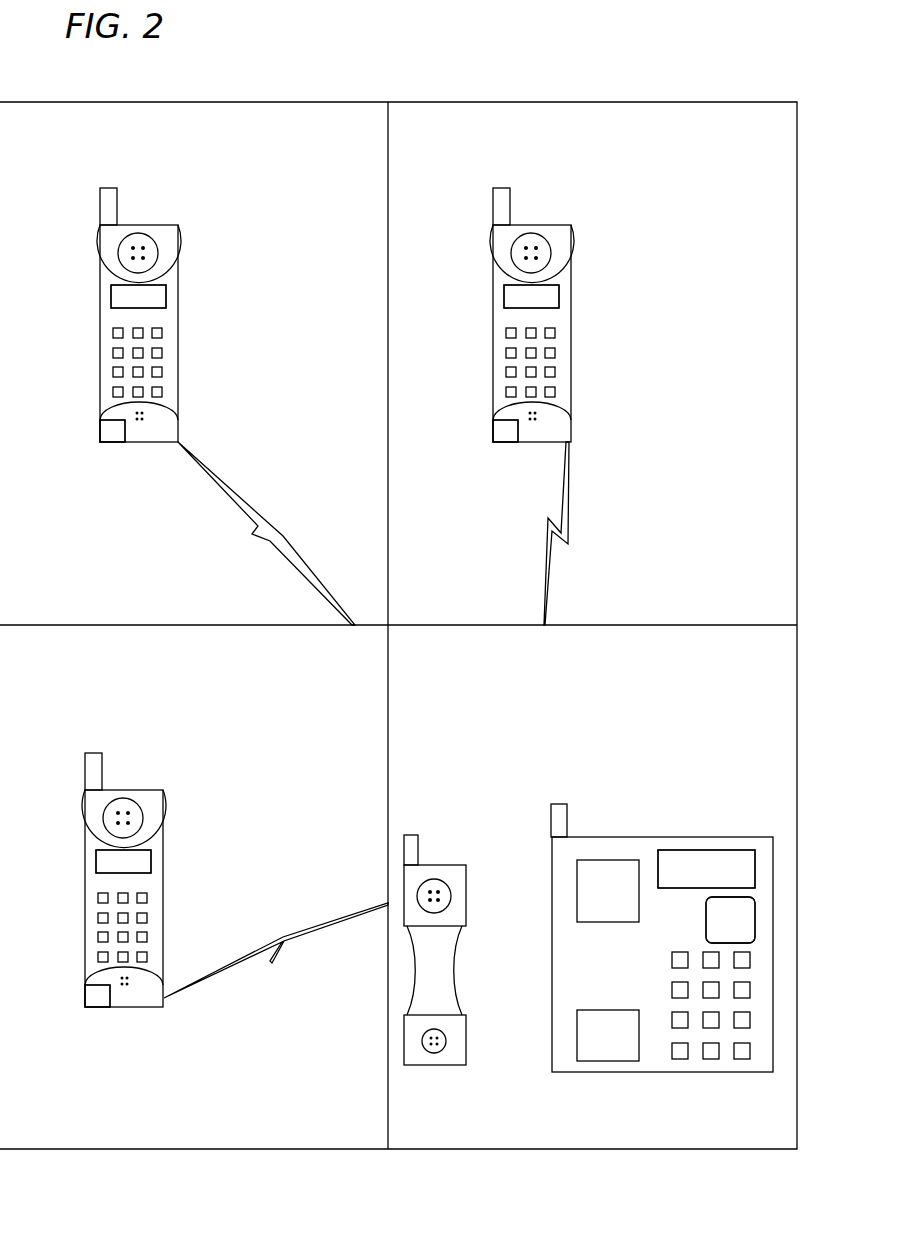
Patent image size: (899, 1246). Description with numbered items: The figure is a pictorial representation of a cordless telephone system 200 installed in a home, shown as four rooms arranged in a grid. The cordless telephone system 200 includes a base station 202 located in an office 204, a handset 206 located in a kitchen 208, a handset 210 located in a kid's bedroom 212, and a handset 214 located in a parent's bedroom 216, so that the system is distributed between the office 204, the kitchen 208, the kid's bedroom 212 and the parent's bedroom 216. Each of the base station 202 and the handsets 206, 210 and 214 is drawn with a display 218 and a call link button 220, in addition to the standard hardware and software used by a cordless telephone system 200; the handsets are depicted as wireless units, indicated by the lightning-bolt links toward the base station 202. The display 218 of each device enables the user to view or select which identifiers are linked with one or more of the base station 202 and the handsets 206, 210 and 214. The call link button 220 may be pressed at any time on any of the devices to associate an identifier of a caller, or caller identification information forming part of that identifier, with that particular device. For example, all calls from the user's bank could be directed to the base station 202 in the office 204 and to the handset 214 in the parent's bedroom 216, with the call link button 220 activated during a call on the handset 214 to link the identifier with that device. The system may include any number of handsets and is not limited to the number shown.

The cordless telephone system 200 is at (702, 102).
The base station 202 is at (617, 832).
The office 204 is at (588, 862).
The handset 206 is at (173, 880).
The kitchen 208 is at (235, 829).
The handset 210 is at (183, 323).
The kid's bedroom 212 is at (226, 373).
The handset 214 is at (581, 315).
The parent's bedroom 216 is at (581, 373).
The display 218 is at (143, 298).
The call link button 220 is at (112, 432).